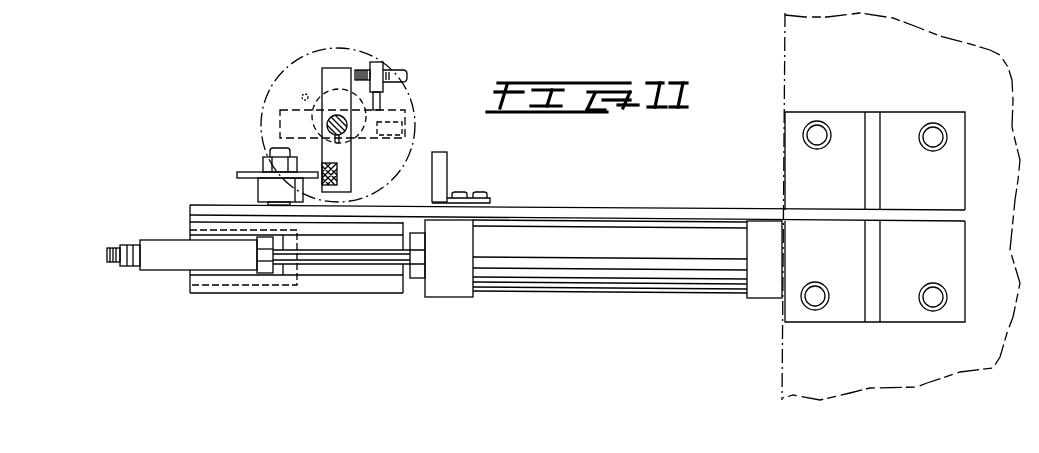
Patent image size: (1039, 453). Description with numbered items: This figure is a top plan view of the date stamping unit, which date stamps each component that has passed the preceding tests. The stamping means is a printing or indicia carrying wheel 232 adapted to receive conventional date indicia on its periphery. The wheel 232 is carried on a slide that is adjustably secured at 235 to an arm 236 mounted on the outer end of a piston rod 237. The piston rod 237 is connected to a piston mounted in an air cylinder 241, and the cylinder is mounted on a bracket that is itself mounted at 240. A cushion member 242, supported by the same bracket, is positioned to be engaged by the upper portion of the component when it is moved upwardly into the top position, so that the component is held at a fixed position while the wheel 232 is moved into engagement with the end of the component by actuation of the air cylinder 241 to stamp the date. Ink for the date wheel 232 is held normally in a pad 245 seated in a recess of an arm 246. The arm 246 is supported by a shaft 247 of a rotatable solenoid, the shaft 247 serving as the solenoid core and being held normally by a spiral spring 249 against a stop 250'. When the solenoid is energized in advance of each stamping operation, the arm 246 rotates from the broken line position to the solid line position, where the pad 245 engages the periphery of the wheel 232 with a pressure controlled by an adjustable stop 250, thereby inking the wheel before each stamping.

The indicia carrying wheel 232 is at (237, 175).
The adjustable securing point 235 is at (131, 268).
The arm 236 is at (165, 252).
The piston rod 237 is at (320, 268).
The bracket mounting 240 is at (817, 143).
The air cylinder 241 is at (578, 294).
The cushion member 242 is at (438, 152).
The pad 245 is at (340, 173).
The arm 246 is at (280, 123).
The shaft 247 is at (328, 124).
The spiral spring 249 is at (310, 86).
The adjustable stop 250 is at (381, 60).
The stop 250' is at (416, 97).